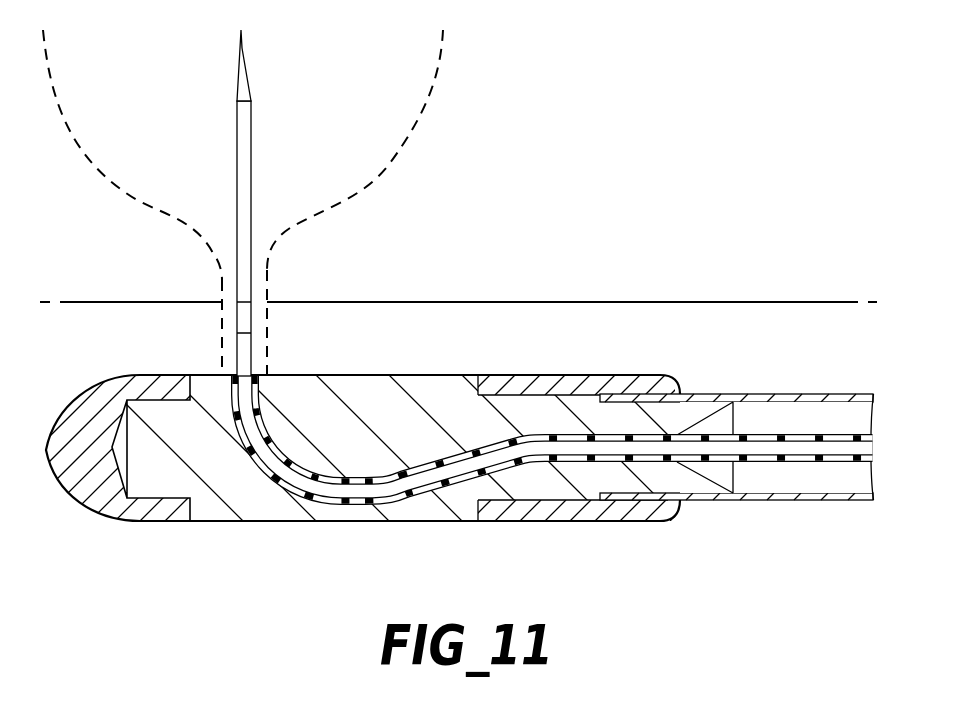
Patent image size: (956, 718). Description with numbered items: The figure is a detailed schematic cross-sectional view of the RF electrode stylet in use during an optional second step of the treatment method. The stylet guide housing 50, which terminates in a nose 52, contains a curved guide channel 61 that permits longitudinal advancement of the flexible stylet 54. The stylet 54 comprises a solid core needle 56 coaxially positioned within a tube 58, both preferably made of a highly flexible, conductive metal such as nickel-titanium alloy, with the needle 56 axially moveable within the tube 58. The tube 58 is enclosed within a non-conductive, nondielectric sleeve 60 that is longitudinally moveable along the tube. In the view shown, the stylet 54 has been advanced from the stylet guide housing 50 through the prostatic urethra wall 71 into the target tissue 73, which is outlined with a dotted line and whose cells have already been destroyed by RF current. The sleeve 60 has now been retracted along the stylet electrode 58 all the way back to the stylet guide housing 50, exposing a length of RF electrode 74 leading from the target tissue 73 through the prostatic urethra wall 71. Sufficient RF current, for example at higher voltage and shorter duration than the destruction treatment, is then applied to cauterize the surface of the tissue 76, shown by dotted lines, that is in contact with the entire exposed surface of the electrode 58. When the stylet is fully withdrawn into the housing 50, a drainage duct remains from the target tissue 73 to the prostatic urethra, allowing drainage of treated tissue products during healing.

The stylet guide housing 50 is at (610, 515).
The nose 52 is at (107, 513).
The stylet 54 is at (286, 283).
The solid core needle 56 is at (249, 73).
The tube 58 is at (252, 175).
The sleeve 60 is at (320, 502).
The guide channel 61 is at (413, 493).
The prostatic urethra wall 71 is at (590, 313).
The target tissue 73 is at (428, 100).
The exposed length of RF electrode 74 is at (247, 318).
The tissue surface 76 is at (222, 328).